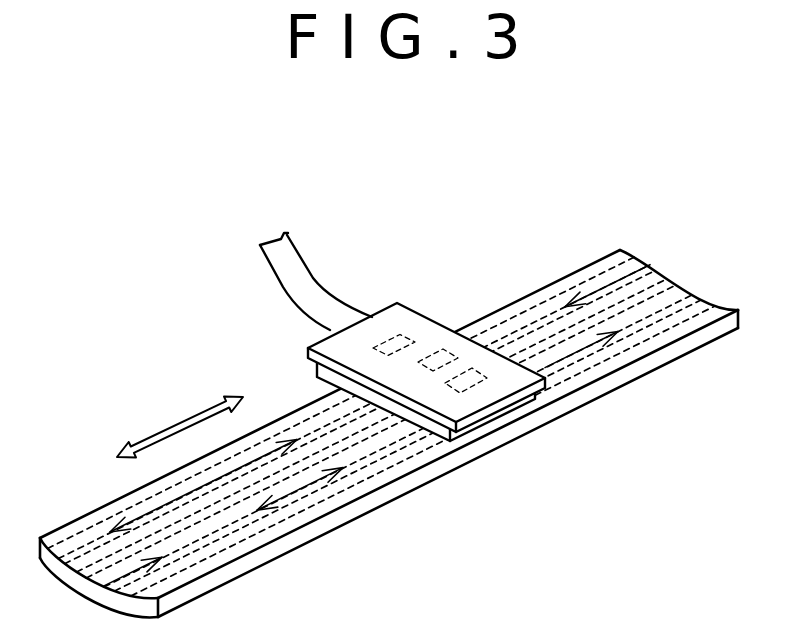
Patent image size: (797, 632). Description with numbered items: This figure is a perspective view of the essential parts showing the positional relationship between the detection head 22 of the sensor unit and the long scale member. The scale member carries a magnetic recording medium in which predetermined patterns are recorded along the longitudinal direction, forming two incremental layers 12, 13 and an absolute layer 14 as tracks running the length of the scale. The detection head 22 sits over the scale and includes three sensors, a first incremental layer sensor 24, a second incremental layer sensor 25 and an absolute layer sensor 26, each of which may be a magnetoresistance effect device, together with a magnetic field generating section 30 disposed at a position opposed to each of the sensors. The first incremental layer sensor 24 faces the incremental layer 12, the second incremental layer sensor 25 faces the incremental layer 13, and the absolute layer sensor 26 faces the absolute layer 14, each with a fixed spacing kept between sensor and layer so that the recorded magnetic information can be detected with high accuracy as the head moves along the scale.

The incremental layer 12 is at (635, 265).
The incremental layer 13 is at (678, 300).
The absolute layer 14 is at (663, 285).
The detection head 22 is at (459, 360).
The first incremental layer sensor 24 is at (393, 347).
The second incremental layer sensor 25 is at (465, 380).
The absolute layer sensor 26 is at (428, 365).
The magnetic field generating section 30 is at (503, 378).